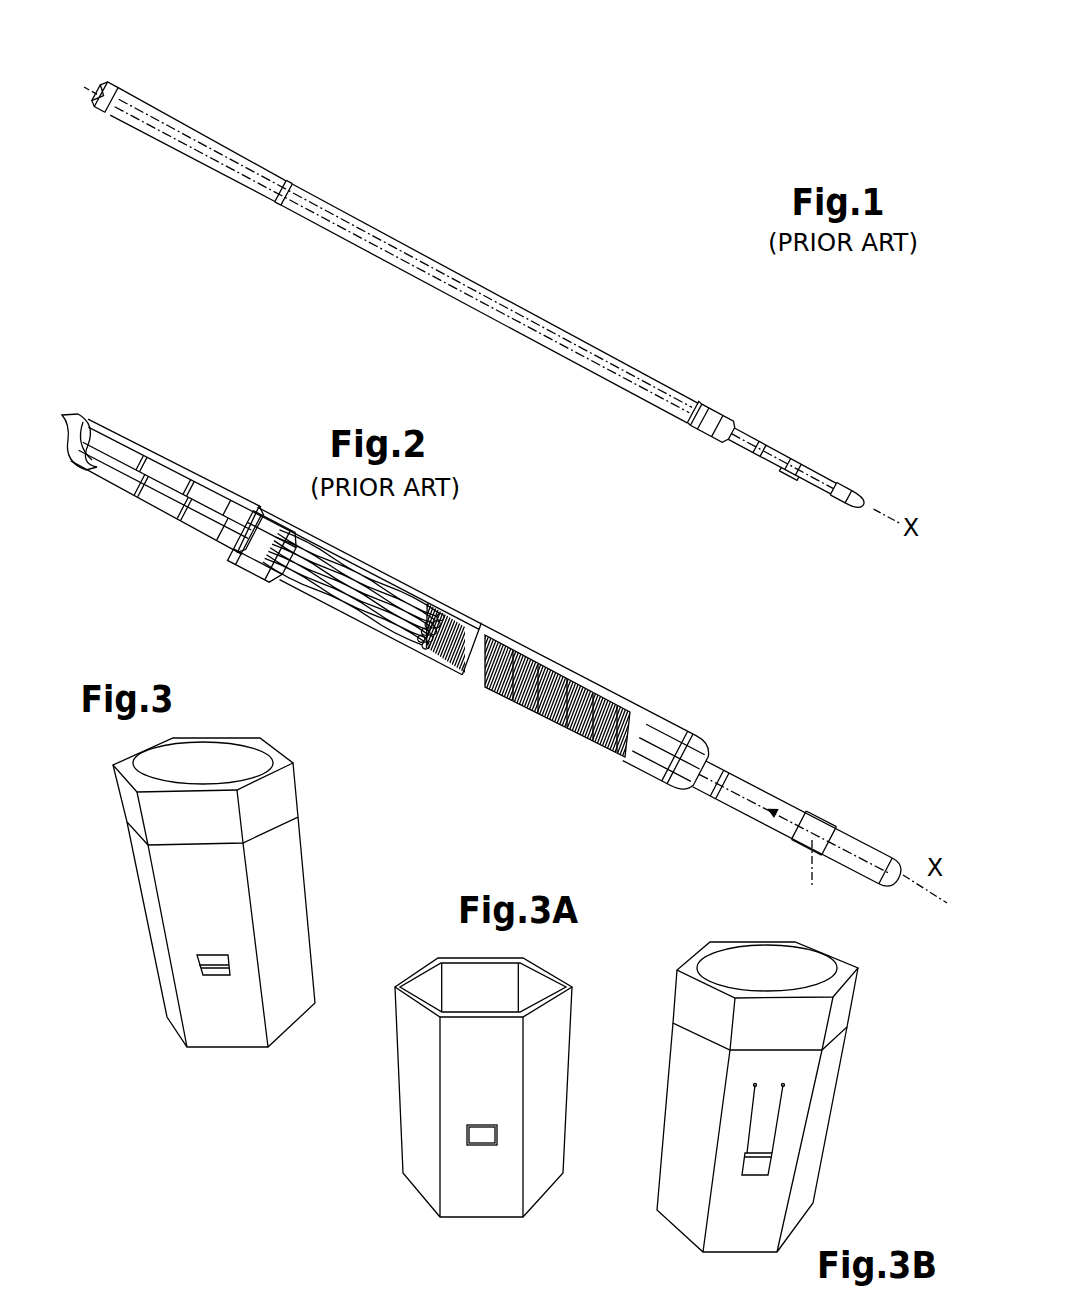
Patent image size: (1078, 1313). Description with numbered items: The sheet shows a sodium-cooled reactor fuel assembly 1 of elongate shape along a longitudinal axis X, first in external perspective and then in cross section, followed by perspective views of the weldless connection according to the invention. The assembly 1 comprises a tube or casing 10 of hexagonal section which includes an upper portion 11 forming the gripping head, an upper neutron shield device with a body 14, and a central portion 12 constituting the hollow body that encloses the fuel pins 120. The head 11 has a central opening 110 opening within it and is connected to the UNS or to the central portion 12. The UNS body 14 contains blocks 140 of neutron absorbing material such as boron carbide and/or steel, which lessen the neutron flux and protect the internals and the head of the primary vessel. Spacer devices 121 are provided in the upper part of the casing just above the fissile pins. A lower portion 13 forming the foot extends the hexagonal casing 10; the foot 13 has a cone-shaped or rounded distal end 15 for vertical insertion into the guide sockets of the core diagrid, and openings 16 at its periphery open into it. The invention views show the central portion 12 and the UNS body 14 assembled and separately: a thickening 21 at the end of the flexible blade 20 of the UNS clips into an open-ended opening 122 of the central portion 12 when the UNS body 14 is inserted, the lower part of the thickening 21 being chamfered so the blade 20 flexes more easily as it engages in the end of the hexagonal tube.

In FIG. 1, the fuel assembly 1 is at (665, 162).
In FIG. 2, the fuel assembly 1 is at (546, 540).
In FIG. 1, the tube or casing 10 is at (482, 222).
In FIG. 1, the upper portion 11 is at (104, 88).
In FIG. 2, the upper portion 11 is at (84, 415).
In FIG. 1, the central opening 110 is at (100, 101).
In FIG. 2, the central opening 110 is at (70, 445).
In FIG. 1, the central portion 12 is at (436, 255).
In FIG. 2, the central portion 12 is at (400, 582).
In FIG. 3, the central portion 12 is at (150, 908).
In FIG. 3A, the central portion 12 is at (403, 1010).
In FIG. 2, the fuel pins 120 is at (527, 647).
In FIG. 1, the spacer devices 121 is at (348, 238).
In FIG. 3, the open-ended opening 122 is at (198, 957).
In FIG. 3A, the open-ended opening 122 is at (482, 1135).
In FIG. 1, the lower portion 13 is at (815, 433).
In FIG. 2, the lower portion 13 is at (746, 778).
In FIG. 1, the UNS body 14 is at (212, 125).
In FIG. 2, the UNS body 14 is at (198, 465).
In FIG. 3, the UNS body 14 is at (127, 798).
In FIG. 3B, the UNS body 14 is at (842, 1008).
In FIG. 2, the blocks 140 is at (203, 535).
In FIG. 1, the distal end 15 is at (836, 503).
In FIG. 1, the openings 16 is at (788, 474).
In FIG. 2, the openings 16 is at (804, 811).
In FIG. 3B, the flexible blade 20 is at (800, 1117).
In FIG. 3, the thickening 21 is at (212, 975).
In FIG. 3B, the thickening 21 is at (755, 1167).